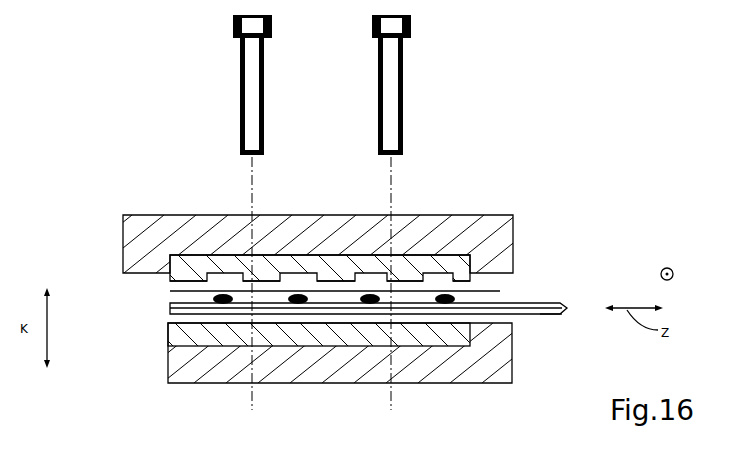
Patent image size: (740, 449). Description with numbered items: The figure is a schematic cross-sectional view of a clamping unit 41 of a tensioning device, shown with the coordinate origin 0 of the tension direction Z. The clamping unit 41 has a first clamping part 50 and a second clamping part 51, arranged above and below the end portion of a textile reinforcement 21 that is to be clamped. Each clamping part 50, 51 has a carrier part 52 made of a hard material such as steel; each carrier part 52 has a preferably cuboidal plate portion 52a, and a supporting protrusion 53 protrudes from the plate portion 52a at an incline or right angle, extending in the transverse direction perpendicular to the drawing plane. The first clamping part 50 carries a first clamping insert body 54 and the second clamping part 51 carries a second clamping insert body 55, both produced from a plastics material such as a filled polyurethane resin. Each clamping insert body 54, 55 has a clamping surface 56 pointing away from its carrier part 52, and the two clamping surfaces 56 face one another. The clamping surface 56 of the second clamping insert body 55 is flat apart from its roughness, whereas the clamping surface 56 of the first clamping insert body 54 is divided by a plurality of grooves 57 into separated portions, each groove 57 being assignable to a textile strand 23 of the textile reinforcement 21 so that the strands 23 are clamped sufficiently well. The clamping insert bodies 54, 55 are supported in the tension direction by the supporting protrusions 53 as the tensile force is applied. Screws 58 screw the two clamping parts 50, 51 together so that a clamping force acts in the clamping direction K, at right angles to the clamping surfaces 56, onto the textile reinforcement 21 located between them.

The origin of coordinate system 0 is at (665, 267).
The textile reinforcement 21 is at (550, 322).
The textile strand 23 is at (187, 298).
The clamping unit 41 is at (560, 124).
The first clamping part 50 is at (107, 212).
The second clamping part 51 is at (152, 371).
The carrier part 52 is at (418, 222).
The plate portion 52a is at (305, 230).
The supporting protrusion 53 is at (505, 265).
The first clamping insert body 54 is at (203, 268).
The second clamping insert body 55 is at (220, 353).
The clamping surface 56 is at (170, 291).
The groove 57 is at (247, 281).
The screw 58 is at (263, 92).